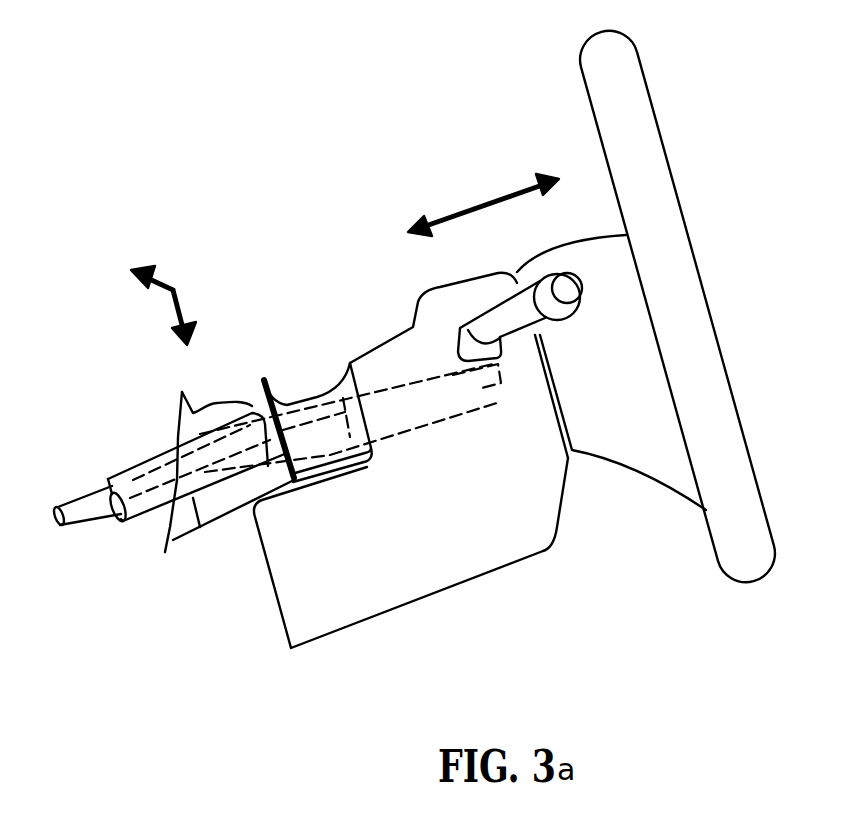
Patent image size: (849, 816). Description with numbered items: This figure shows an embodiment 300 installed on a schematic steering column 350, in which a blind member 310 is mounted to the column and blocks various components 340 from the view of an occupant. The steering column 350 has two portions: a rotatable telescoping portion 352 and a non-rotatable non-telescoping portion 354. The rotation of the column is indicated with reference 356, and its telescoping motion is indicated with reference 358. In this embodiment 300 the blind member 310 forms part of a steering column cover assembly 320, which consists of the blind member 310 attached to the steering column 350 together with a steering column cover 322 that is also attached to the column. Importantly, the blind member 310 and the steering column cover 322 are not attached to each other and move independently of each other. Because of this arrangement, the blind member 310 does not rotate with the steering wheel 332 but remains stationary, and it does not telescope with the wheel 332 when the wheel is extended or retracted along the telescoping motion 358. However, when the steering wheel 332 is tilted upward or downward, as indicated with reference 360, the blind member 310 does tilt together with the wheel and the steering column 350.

The embodiment 300 is at (368, 226).
The blind member 310 is at (320, 397).
The steering column cover assembly 320 is at (447, 577).
The steering column cover 322 is at (407, 568).
The steering wheel 332 is at (660, 193).
The components 340 is at (193, 397).
The steering column 350 is at (115, 460).
The rotatable telescoping portion 352 is at (449, 383).
The non-rotatable non-telescoping portion 354 is at (133, 521).
The rotation 356 is at (604, 385).
The telescoping motion 358 is at (480, 207).
The tilting 360 is at (173, 290).